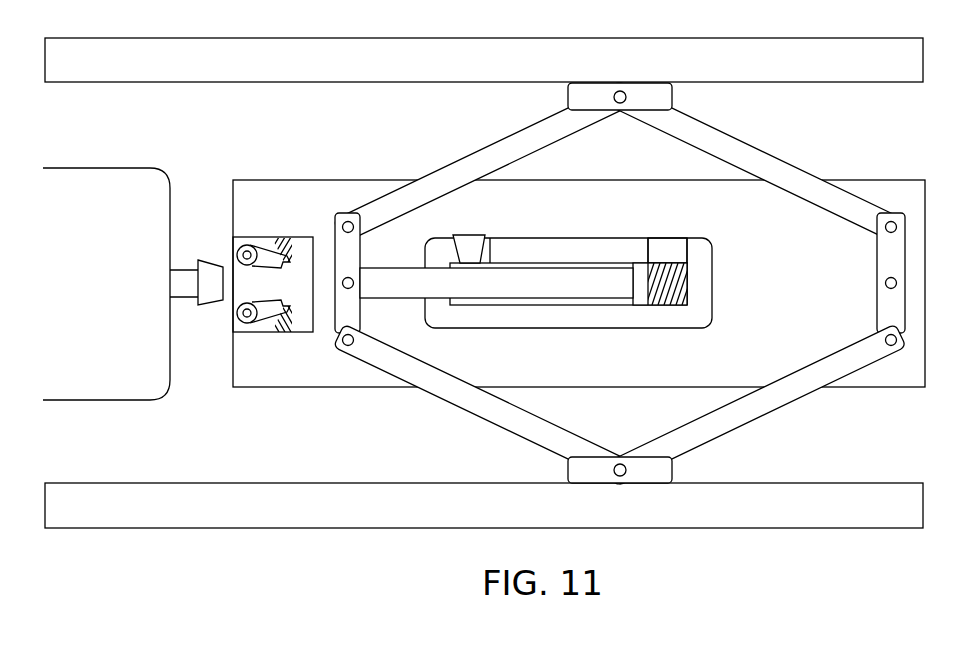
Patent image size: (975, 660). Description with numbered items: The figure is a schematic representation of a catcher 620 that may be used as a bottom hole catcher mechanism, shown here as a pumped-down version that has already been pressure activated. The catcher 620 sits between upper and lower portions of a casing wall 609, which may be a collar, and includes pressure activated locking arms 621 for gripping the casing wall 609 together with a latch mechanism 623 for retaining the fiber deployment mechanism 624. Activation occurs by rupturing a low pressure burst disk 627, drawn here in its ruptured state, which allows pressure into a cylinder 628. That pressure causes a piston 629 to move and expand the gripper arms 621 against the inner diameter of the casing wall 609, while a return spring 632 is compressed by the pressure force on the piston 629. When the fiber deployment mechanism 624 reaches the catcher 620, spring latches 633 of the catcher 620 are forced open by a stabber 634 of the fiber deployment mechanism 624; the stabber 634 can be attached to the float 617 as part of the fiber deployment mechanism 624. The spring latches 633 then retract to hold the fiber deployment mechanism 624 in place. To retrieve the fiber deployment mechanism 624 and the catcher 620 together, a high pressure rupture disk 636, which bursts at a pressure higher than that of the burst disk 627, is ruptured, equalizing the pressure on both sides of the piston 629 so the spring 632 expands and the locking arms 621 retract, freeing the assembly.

The casing wall 609 is at (484, 38).
The float 617 is at (96, 168).
The catcher 620 is at (647, 283).
The locking arms 621 is at (787, 157).
The latch mechanism 623 is at (277, 237).
The fiber deployment mechanism 624 is at (191, 322).
The low pressure burst disk 627 is at (468, 235).
The cylinder 628 is at (568, 328).
The piston 629 is at (515, 287).
The return spring 632 is at (688, 282).
The spring latches 633 is at (273, 263).
The stabber 634 is at (210, 262).
The high pressure rupture disk 636 is at (667, 238).